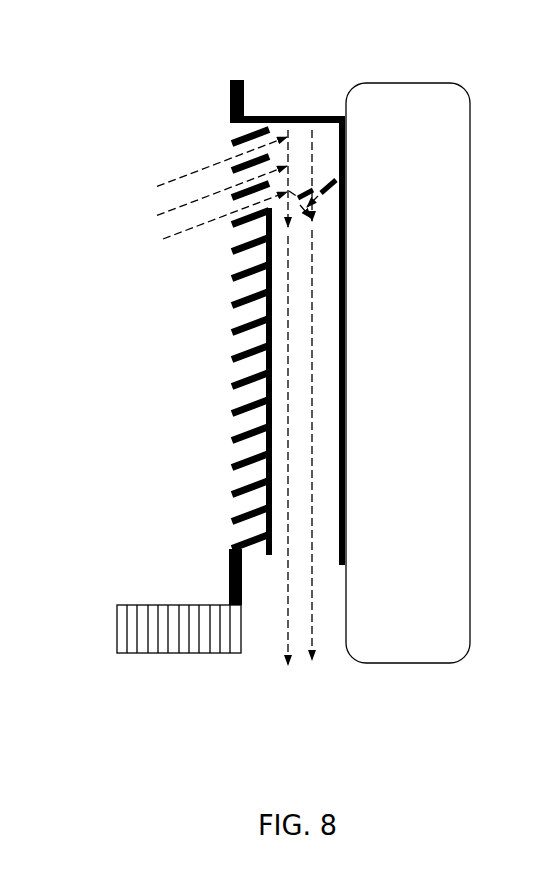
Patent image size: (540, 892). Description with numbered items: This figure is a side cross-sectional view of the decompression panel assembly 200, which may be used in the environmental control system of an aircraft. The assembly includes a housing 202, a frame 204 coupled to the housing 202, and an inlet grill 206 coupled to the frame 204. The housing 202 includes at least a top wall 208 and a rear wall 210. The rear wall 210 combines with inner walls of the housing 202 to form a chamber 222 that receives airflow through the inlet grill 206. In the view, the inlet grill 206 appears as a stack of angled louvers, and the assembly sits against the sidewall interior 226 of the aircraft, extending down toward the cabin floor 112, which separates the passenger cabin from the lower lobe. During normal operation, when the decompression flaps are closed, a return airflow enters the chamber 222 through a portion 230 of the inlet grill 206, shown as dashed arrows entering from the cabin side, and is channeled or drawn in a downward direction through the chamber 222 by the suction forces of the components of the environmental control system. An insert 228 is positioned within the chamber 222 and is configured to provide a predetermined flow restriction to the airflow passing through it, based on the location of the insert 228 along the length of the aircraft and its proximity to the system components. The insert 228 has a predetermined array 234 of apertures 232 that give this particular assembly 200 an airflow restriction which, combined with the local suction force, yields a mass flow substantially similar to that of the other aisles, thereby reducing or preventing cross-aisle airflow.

The decompression panel assembly 200 is at (119, 73).
The housing 202 is at (321, 115).
The frame 204 is at (230, 97).
The inlet grill 206 is at (217, 362).
The top wall 208 is at (289, 117).
The rear wall 210 is at (345, 544).
The chamber 222 is at (328, 461).
The sidewall interior 226 is at (448, 383).
The insert 228 is at (330, 189).
The portion of inlet grill 230 is at (204, 157).
The apertures 232 is at (323, 193).
The array of apertures 234 is at (309, 209).
The cabin floor 112 is at (134, 640).